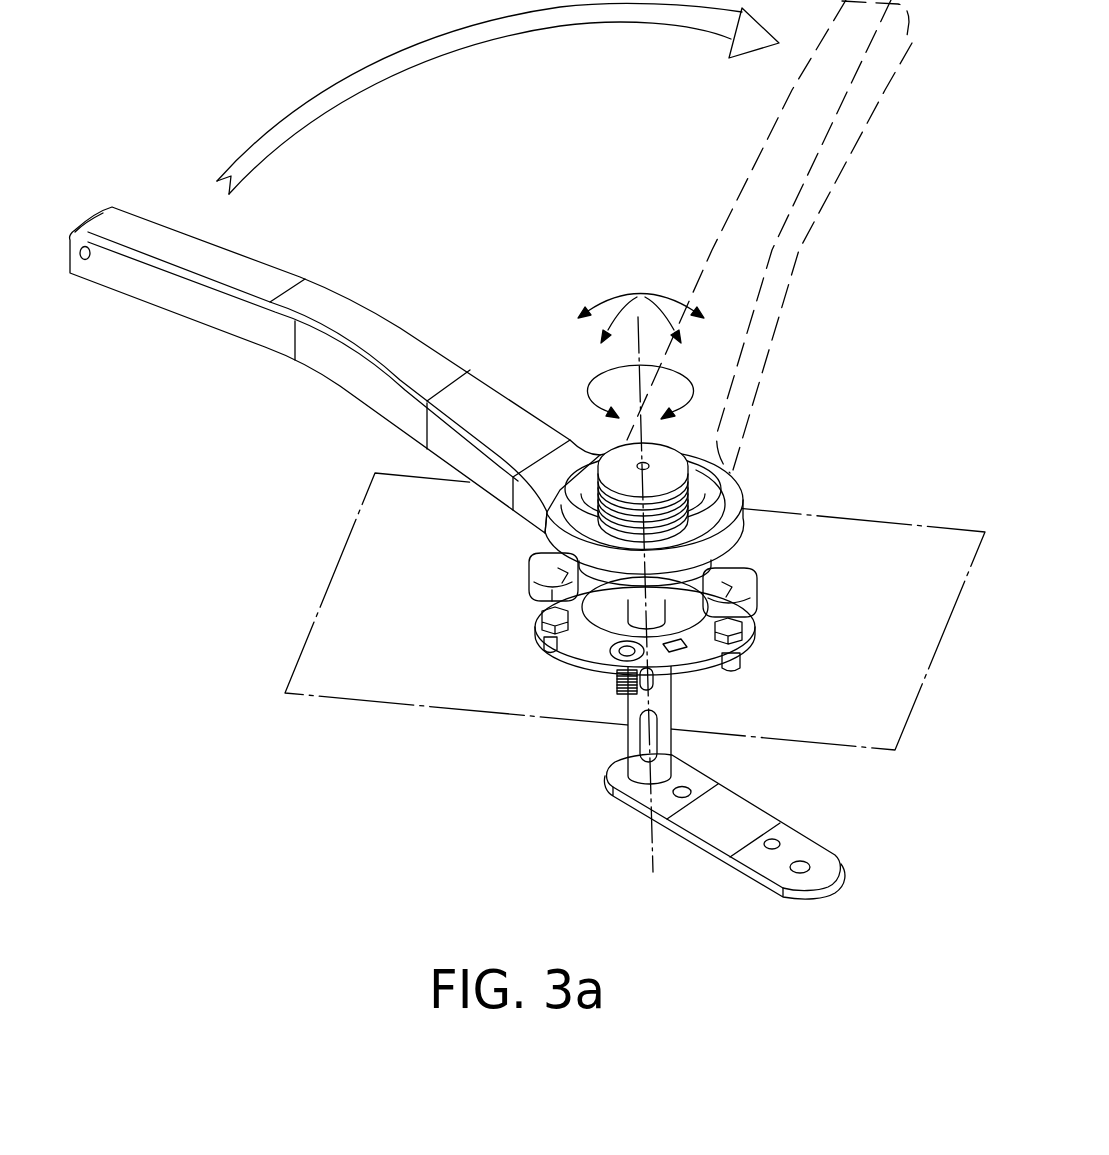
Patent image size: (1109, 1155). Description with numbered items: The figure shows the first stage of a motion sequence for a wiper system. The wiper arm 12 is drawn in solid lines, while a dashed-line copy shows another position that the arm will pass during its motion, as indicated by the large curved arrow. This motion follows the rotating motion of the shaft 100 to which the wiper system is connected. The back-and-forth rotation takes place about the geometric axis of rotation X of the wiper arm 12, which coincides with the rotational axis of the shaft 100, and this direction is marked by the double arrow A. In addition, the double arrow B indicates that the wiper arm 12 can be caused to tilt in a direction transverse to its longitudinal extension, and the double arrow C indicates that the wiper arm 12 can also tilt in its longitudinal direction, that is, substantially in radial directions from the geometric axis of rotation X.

The wiper arm 12 is at (160, 288).
The shaft 100 is at (633, 737).
The geometric axis of rotation X is at (648, 848).
The rotation direction A is at (634, 401).
The transverse tilting direction B is at (650, 326).
The longitudinal tilting direction C is at (637, 324).